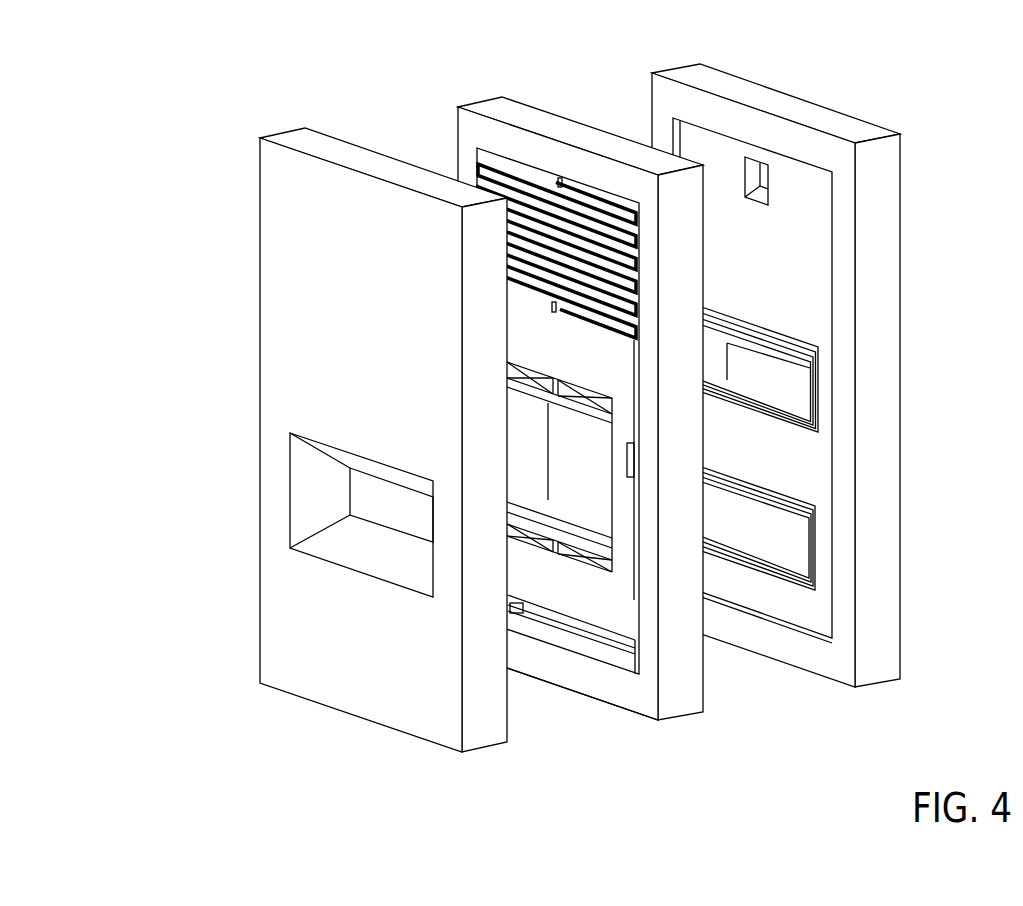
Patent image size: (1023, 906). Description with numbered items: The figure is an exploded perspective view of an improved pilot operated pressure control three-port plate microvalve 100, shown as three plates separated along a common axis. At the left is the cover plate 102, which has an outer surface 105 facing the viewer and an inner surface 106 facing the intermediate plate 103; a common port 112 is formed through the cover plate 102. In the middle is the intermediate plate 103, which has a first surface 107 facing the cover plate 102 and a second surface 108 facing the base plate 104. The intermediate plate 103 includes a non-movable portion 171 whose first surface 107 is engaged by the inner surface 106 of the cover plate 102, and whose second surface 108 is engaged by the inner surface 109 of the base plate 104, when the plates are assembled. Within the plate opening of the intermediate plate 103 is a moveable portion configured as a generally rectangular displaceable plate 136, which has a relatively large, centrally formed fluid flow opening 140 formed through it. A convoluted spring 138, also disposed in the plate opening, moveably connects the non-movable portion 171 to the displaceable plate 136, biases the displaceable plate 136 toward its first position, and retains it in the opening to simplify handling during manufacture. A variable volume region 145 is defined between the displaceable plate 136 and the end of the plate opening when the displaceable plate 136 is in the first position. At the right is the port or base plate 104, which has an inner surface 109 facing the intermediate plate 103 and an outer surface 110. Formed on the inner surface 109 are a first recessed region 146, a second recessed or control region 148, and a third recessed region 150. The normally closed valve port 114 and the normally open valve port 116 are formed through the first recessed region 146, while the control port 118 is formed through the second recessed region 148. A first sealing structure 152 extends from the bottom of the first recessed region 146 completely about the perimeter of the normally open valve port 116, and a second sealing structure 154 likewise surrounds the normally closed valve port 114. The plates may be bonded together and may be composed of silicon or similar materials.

The microvalve 100 is at (216, 62).
The cover plate 102 is at (340, 138).
The intermediate plate 103 is at (572, 120).
The base plate 104 is at (741, 78).
The outer surface 105 is at (453, 233).
The inner surface 106 is at (394, 150).
The first surface 107 is at (650, 198).
The second surface 108 is at (602, 137).
The inner surface 109 is at (847, 163).
The outer surface 110 is at (793, 108).
The common port 112 is at (318, 493).
The normally closed valve port 114 is at (785, 532).
The normally open valve port 116 is at (792, 383).
The control port 118 is at (768, 183).
The displaceable plate 136 is at (618, 603).
The convoluted spring 138 is at (640, 258).
The fluid flow opening 140 is at (585, 500).
The variable volume region 145 is at (633, 660).
The first recessed region 146 is at (808, 460).
The second recessed region 148 is at (815, 308).
The third recessed region 150 is at (822, 617).
The first sealing structure 152 is at (813, 370).
The second sealing structure 154 is at (780, 503).
The non-movable portion 171 is at (588, 675).